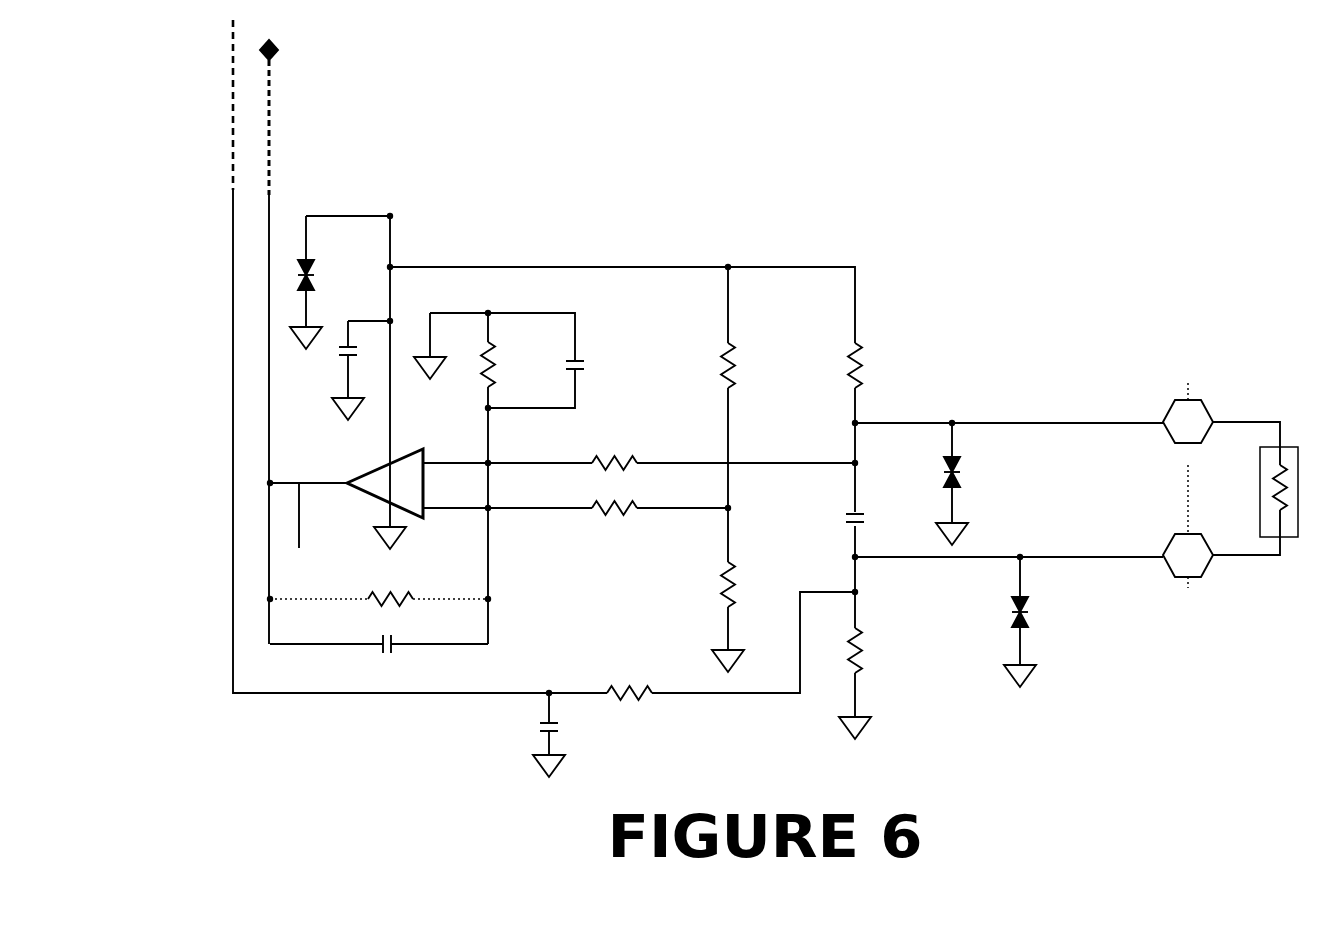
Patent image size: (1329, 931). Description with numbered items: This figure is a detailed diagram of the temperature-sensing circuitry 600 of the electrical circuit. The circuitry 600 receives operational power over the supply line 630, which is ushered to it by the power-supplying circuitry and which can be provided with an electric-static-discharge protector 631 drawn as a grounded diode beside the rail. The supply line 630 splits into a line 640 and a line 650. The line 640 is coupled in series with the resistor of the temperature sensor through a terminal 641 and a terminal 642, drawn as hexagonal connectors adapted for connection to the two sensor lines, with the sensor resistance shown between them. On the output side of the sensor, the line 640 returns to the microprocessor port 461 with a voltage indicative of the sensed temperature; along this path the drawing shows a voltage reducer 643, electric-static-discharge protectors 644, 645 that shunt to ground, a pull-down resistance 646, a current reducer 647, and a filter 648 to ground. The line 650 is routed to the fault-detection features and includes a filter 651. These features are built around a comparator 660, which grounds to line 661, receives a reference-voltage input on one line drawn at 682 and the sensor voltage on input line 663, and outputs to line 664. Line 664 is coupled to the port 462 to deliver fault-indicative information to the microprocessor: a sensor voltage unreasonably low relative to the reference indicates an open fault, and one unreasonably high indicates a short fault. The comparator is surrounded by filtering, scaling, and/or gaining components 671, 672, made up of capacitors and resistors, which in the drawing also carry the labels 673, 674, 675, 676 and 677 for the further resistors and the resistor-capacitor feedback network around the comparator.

The temperature-sensing circuitry 600 is at (988, 176).
The microprocessor port 461 is at (536, 360).
The port 462 is at (301, 334).
The supply line 630 is at (390, 216).
The line 640 is at (440, 267).
The line 650 is at (395, 293).
The electric-static-discharge protector 631 is at (309, 276).
The filter 651 is at (348, 370).
The resistor R6h and capacitor C6d network 676 is at (517, 478).
The comparator 660 is at (385, 483).
The non-inverting input line 682 is at (447, 463).
The input line 663 is at (447, 510).
The line 661 is at (384, 526).
The line 664 is at (302, 526).
The feedback network R6i and C6e 677 is at (379, 626).
The resistor R6f 674 is at (723, 463).
The resistor R6g 675 is at (660, 509).
The filtering, scaling, and/or gaining components 672 is at (728, 414).
The resistor R6e 673 is at (728, 617).
The current reducer 647 is at (630, 696).
The filter 648 is at (544, 735).
The resistor R6a 643 is at (854, 427).
The filtering, scaling, and/or gaining components 671 is at (853, 568).
The pull-down resistance 646 is at (853, 683).
The electric-static-discharge protector 644 is at (1009, 484).
The electric-static-discharge protector 645 is at (1009, 622).
The terminal 641 is at (1230, 469).
The terminal 642 is at (1188, 568).